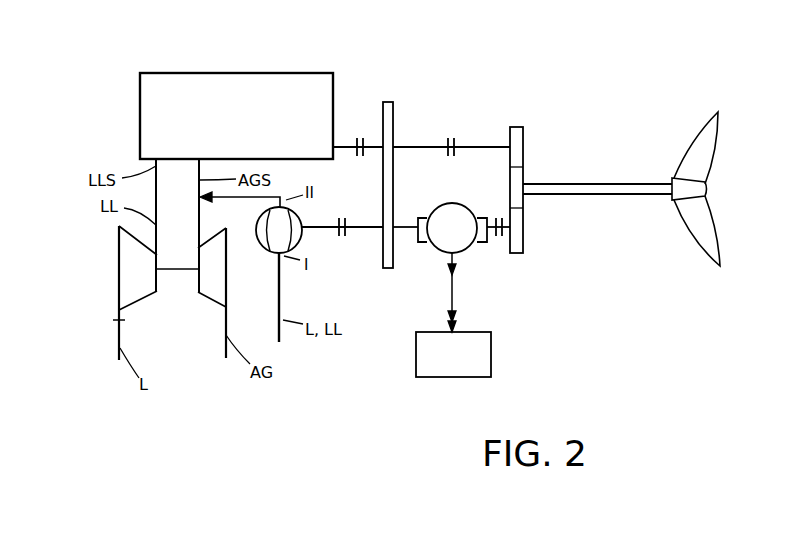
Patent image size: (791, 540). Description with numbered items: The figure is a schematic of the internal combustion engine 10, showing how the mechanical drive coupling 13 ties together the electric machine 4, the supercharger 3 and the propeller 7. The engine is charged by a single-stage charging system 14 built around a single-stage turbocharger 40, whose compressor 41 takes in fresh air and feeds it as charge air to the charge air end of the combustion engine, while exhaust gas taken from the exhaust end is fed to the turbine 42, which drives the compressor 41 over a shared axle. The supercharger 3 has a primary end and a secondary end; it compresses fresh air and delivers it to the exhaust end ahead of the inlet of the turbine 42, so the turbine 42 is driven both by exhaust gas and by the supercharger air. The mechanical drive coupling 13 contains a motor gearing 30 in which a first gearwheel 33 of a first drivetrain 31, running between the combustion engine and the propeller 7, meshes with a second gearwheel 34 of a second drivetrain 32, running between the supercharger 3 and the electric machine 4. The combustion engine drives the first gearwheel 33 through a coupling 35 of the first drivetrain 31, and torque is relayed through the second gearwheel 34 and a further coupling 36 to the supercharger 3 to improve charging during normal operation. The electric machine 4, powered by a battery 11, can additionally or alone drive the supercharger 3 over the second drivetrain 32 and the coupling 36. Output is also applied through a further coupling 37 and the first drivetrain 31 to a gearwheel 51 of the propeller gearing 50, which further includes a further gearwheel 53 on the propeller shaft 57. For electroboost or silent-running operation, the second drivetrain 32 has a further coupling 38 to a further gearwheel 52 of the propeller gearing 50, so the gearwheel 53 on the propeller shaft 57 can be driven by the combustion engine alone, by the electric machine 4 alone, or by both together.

The internal combustion engine 10 is at (108, 55).
The electric machine 4 is at (300, 72).
The single-stage turbocharger 40 is at (178, 270).
The compressor 41 is at (119, 265).
The turbine 42 is at (226, 285).
The single-stage charging system 14 is at (107, 345).
The supercharger 3 is at (312, 252).
The second drivetrain 32 is at (358, 230).
The further coupling 36 is at (342, 216).
The first drivetrain 31 is at (417, 148).
The coupling 35 is at (360, 136).
The further coupling 37 is at (451, 136).
The motor gearing 30 is at (396, 163).
The first gearwheel 33 is at (394, 124).
The second gearwheel 34 is at (383, 256).
The mechanical drive coupling 13 is at (392, 295).
The further coupling 38 is at (498, 216).
The battery 11 is at (492, 338).
The propeller gearing 50 is at (547, 159).
The gearwheel 51 is at (524, 140).
The further gearwheel 53 is at (524, 178).
The further gearwheel 52 is at (524, 226).
The propeller shaft 57 is at (600, 183).
The propeller 7 is at (694, 143).